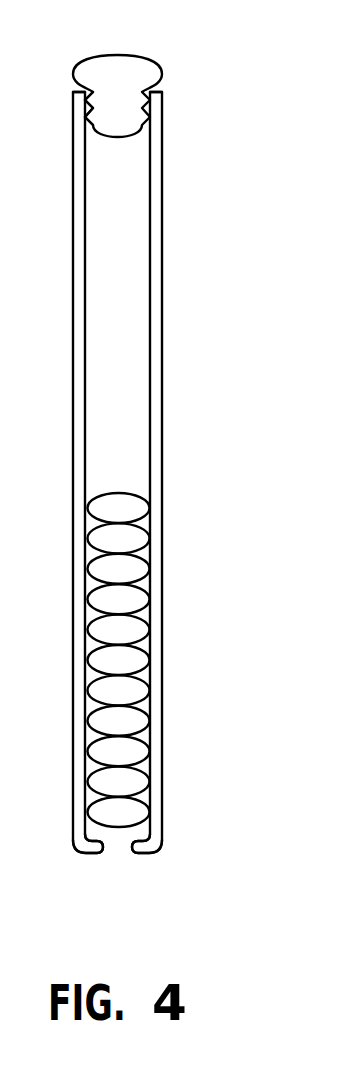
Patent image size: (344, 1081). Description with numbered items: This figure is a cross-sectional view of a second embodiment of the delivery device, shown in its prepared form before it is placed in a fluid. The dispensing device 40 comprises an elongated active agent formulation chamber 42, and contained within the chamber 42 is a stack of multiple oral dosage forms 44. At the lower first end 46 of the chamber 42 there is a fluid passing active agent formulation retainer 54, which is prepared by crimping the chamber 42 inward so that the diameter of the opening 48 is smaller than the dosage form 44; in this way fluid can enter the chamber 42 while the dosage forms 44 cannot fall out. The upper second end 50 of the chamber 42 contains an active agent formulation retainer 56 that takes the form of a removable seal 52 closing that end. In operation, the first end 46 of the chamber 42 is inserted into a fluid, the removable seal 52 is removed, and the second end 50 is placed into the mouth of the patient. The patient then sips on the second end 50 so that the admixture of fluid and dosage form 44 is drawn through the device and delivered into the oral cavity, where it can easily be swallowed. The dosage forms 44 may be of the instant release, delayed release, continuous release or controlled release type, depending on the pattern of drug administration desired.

The dispensing device 40 is at (207, 263).
The active agent formulation chamber 42 is at (164, 481).
The oral dosage forms 44 is at (140, 567).
The first end 46 is at (163, 849).
The opening 48 is at (118, 848).
The second end 50 is at (164, 91).
The removable seal 52 is at (120, 62).
The fluid passing active agent formulation retainer 54 is at (73, 855).
The active agent formulation retainer 56 is at (88, 125).